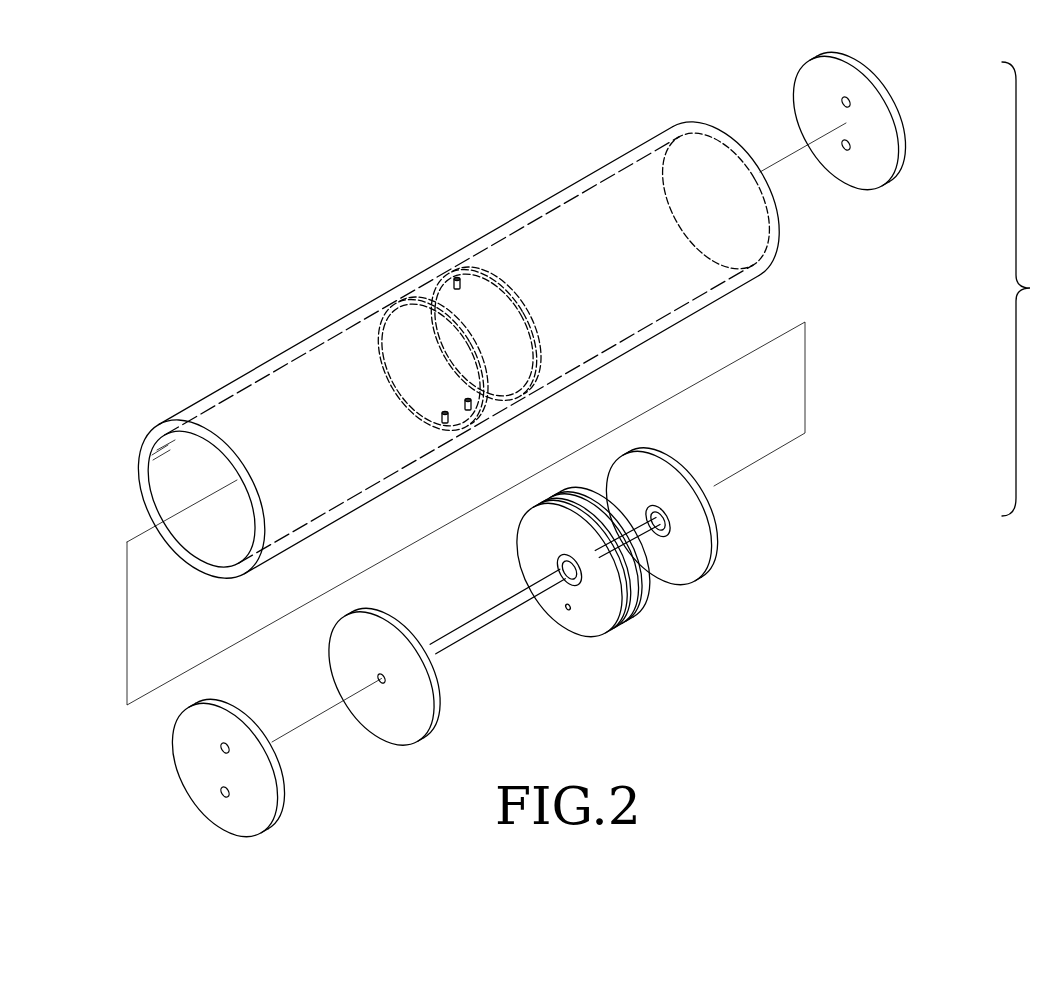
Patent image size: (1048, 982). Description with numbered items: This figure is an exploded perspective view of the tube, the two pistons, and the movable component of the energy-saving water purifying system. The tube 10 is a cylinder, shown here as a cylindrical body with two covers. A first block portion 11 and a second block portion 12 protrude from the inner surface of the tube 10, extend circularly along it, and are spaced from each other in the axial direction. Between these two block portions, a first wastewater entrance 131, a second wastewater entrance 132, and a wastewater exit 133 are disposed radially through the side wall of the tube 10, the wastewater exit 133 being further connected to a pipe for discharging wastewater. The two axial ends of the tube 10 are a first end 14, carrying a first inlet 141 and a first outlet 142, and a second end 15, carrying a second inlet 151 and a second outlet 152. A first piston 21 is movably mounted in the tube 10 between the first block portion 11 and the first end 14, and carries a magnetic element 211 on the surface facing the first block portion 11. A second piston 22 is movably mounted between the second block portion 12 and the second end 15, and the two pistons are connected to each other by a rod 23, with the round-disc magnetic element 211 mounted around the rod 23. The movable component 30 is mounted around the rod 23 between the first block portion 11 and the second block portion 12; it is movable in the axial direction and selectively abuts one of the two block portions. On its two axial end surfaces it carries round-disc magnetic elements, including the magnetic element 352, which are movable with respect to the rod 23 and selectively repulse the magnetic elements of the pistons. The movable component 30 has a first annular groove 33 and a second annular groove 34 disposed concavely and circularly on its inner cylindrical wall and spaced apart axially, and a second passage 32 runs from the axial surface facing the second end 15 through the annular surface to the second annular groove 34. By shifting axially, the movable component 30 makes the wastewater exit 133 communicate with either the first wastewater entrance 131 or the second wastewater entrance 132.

The tube 10 is at (344, 289).
The first block portion 11 is at (540, 350).
The second block portion 12 is at (377, 332).
The first wastewater entrance 131 is at (476, 409).
The second wastewater entrance 132 is at (449, 425).
The wastewater exit 133 is at (455, 276).
The first end 14 is at (910, 109).
The first inlet 141 is at (841, 100).
The first outlet 142 is at (847, 151).
The second end 15 is at (152, 776).
The second inlet 151 is at (221, 748).
The second outlet 152 is at (222, 795).
The first piston 21 is at (703, 540).
The magnetic element 211 is at (670, 522).
The second piston 22 is at (430, 708).
The rod 23 is at (500, 614).
The movable component 30 is at (636, 642).
The second passage 32 is at (566, 612).
The first annular groove 33 is at (618, 614).
The second annular groove 34 is at (632, 598).
The magnetic element 352 is at (558, 566).